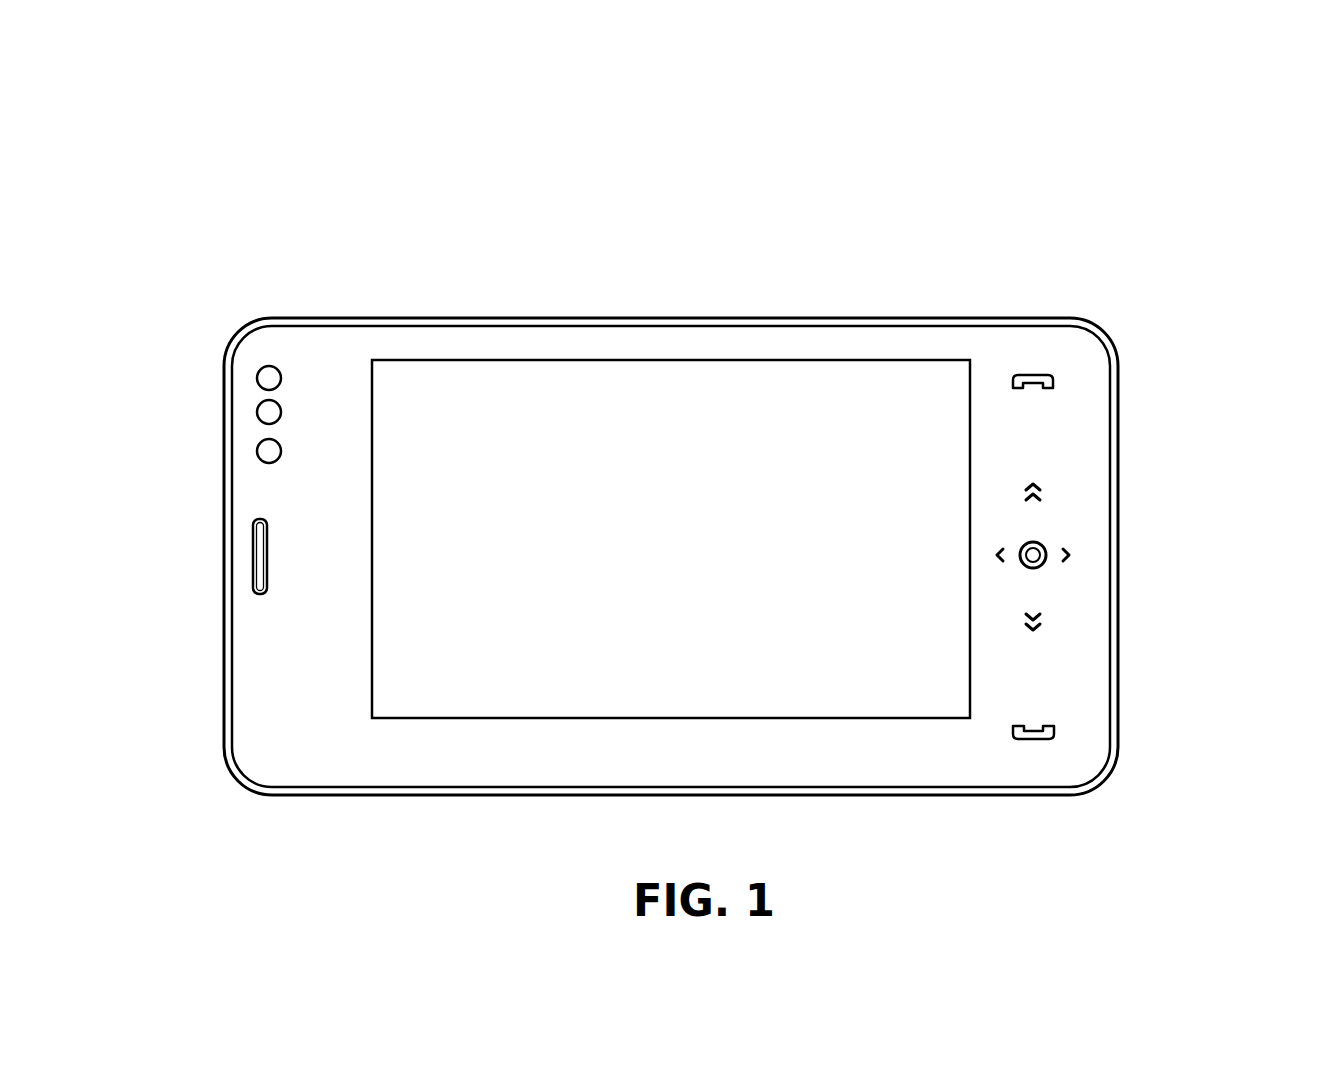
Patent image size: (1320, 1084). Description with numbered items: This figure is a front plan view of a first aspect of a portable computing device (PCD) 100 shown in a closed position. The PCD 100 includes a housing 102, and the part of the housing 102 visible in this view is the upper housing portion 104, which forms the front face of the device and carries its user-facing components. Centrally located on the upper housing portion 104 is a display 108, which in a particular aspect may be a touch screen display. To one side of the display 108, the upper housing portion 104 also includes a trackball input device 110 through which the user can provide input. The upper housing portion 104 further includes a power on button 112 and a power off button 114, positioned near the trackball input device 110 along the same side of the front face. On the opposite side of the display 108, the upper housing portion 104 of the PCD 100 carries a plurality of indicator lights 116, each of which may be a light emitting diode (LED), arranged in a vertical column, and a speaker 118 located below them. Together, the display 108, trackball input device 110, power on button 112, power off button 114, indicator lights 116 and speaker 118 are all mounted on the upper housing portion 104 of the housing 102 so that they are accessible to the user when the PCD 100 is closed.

The portable computing device 100 is at (1170, 258).
The housing 102 is at (266, 317).
The upper housing portion 104 is at (660, 333).
The display 108 is at (675, 698).
The trackball input device 110 is at (1040, 562).
The power on button 112 is at (1055, 736).
The power off button 114 is at (1055, 375).
The indicator lights 116 is at (258, 355).
The speaker 118 is at (258, 558).